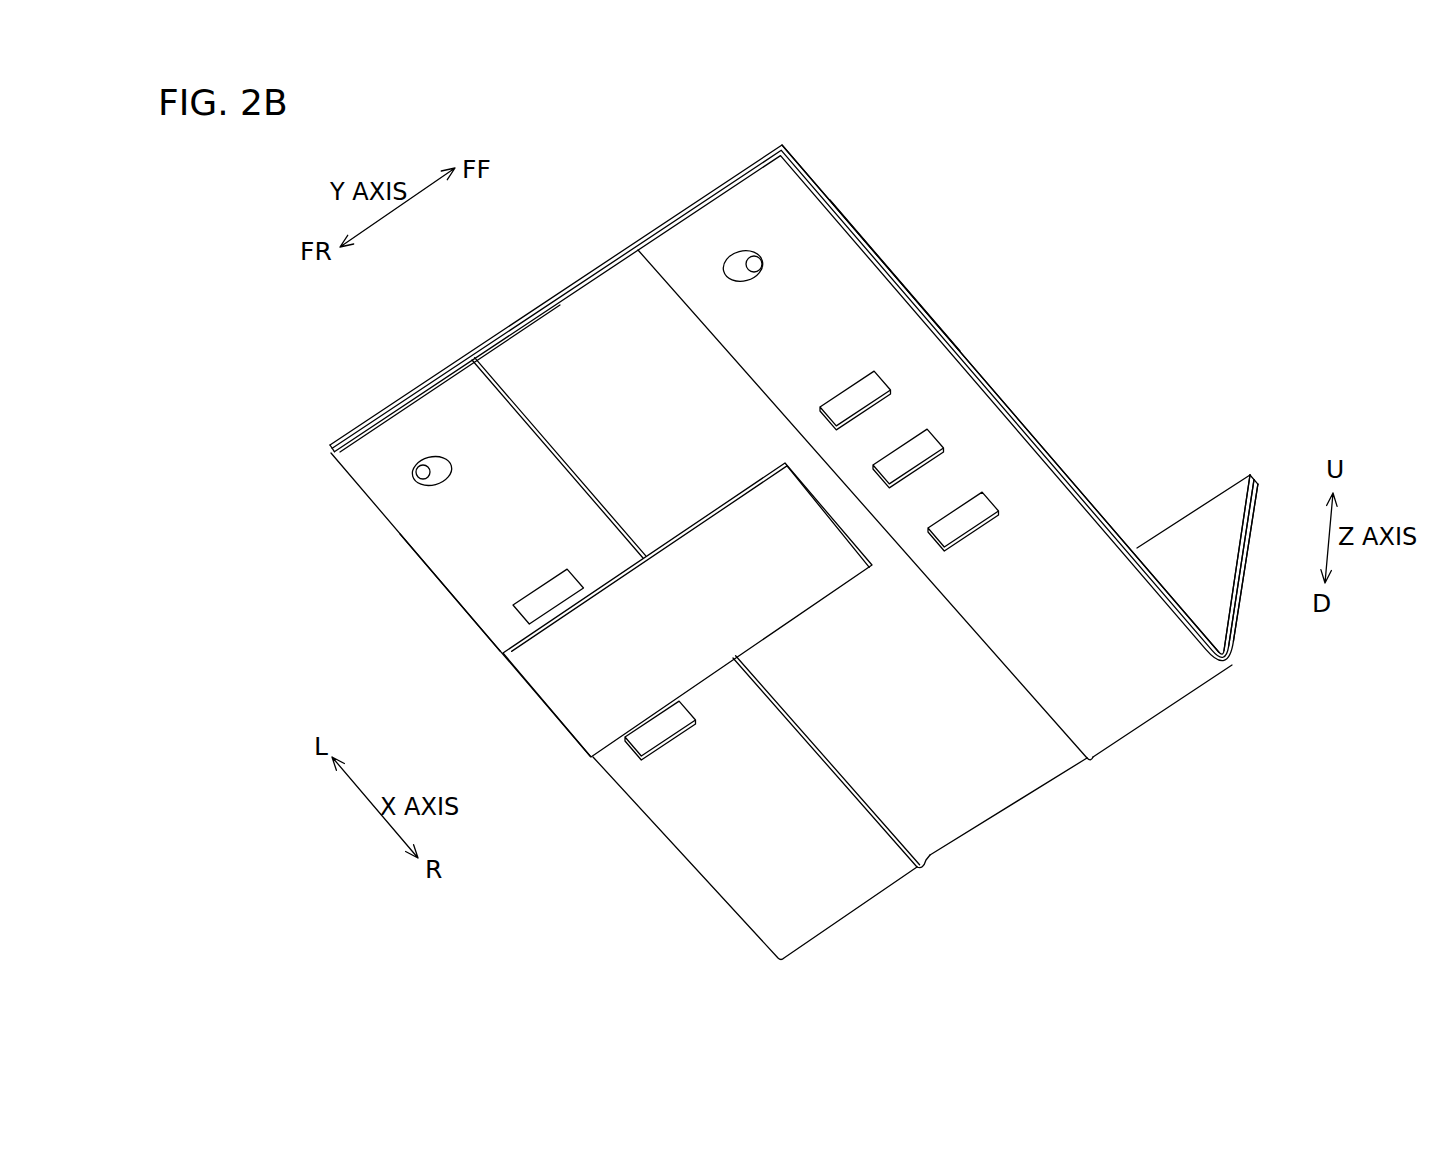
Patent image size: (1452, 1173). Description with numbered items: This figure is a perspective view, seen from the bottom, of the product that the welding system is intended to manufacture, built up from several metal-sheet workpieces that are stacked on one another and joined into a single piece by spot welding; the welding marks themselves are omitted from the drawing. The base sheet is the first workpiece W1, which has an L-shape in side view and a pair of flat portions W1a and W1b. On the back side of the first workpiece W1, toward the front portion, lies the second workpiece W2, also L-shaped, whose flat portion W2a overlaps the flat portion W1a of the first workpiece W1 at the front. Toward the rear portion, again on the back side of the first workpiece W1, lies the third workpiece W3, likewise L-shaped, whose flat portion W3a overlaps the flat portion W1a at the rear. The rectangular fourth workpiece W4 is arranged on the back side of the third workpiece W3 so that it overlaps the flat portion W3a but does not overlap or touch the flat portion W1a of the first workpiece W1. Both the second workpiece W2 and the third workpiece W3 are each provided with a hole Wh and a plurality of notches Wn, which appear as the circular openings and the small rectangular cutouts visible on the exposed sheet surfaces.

The first workpiece W1 is at (577, 278).
The flat portion of the first workpiece W1a is at (503, 352).
The flat portion of the first workpiece W1b is at (1193, 537).
The second workpiece W2 is at (987, 450).
The flat portion of the second workpiece W2a is at (893, 302).
The third workpiece W3 is at (628, 802).
The flat portion of the third workpiece W3a is at (477, 523).
The fourth workpiece W4 is at (770, 565).
The hole Wh is at (755, 268).
The notch Wn is at (878, 380).